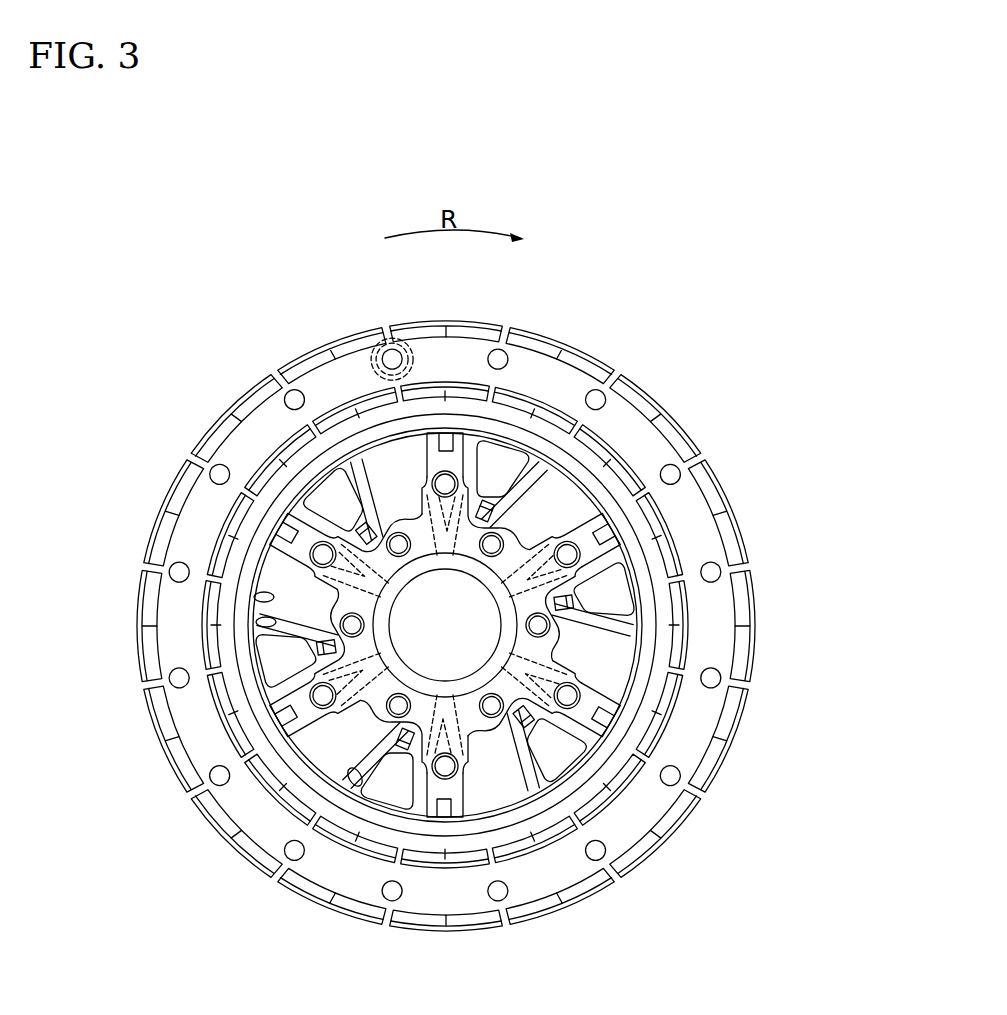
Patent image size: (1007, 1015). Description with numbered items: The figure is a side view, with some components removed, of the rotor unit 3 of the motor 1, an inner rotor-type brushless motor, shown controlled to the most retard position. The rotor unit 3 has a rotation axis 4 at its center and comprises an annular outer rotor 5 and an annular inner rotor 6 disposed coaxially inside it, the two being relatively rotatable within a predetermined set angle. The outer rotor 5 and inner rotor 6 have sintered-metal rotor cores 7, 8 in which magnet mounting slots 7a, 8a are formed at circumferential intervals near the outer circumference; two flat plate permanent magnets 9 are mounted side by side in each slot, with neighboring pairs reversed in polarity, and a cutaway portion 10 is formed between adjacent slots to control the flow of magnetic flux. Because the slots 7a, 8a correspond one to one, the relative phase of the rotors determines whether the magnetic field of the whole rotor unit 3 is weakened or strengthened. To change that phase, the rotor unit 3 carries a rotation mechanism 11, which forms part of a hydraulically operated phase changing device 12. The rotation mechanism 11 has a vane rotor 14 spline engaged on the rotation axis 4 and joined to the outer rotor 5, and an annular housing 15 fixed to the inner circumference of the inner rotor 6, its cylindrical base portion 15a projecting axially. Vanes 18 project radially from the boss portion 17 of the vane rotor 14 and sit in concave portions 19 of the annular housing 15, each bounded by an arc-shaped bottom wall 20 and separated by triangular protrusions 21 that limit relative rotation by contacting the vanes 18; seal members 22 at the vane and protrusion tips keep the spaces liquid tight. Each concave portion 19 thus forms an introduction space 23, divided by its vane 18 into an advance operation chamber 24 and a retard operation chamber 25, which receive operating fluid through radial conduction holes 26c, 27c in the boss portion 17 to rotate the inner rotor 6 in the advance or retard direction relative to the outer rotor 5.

The motor 1 is at (706, 313).
The rotor unit 3 is at (734, 342).
The rotation axis 4 is at (540, 730).
The outer rotor 5 is at (658, 394).
The inner rotor 6 is at (682, 427).
The rotor core 7 is at (710, 528).
The magnet mounting slot 7a is at (543, 348).
The rotor core 8 is at (663, 608).
The magnet mounting slot 8a is at (433, 393).
The permanent magnet 9 is at (468, 393).
The cutaway portion 10 is at (488, 360).
The rotation mechanism 11 is at (283, 520).
The phase changing device 12 is at (445, 625).
The vane rotor 14 is at (355, 680).
The annular housing 15 is at (385, 819).
The base portion 15a is at (597, 763).
The boss portion 17 is at (466, 653).
The vane 18 is at (242, 560).
The concave portion 19 is at (275, 622).
The bottom wall 20 is at (262, 596).
The protrusion 21 is at (300, 535).
The seal member 22 is at (530, 718).
The introduction space 23 is at (388, 633).
The advance operation chamber 24 is at (256, 558).
The retard operation chamber 25 is at (395, 578).
The conduction hole 26c is at (398, 565).
The conduction hole 27c is at (396, 617).